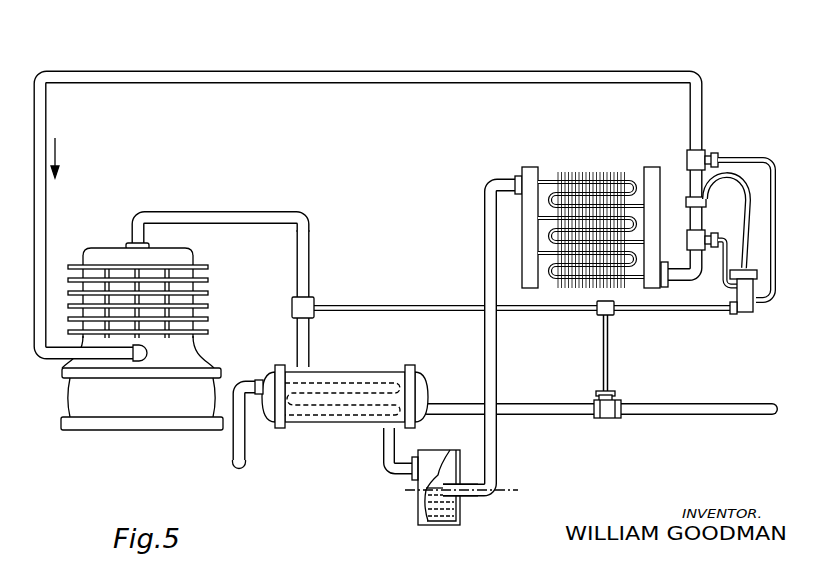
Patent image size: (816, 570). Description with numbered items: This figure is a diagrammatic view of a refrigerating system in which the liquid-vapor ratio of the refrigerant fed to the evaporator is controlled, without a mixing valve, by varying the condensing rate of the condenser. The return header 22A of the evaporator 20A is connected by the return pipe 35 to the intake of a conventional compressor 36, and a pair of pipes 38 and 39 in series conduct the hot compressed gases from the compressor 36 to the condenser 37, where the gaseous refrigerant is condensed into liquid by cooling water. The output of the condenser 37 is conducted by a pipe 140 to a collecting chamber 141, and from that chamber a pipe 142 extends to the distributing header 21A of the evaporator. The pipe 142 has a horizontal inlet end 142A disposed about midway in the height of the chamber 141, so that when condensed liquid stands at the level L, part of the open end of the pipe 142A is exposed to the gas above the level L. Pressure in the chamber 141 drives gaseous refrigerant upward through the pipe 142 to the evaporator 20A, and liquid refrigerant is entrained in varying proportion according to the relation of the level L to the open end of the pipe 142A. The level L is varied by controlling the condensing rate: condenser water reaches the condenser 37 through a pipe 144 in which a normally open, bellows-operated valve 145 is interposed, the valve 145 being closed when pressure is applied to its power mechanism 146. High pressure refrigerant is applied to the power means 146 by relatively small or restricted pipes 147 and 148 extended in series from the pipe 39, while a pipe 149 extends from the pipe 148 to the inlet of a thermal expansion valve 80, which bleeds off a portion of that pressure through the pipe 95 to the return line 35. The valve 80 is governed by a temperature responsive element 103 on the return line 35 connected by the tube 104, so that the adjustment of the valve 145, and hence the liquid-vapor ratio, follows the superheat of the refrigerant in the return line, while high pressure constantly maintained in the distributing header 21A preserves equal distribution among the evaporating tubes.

The return pipe 35 is at (432, 71).
The pipe 38 is at (199, 211).
The pipe 39 is at (309, 279).
The compressor 36 is at (208, 304).
The condenser 37 is at (328, 372).
The pipe 140 is at (383, 445).
The collecting chamber 141 is at (447, 467).
The pipe 142 is at (498, 378).
The horizontal inlet end 142A is at (467, 499).
The distributing header 21A is at (482, 333).
The evaporator 20A is at (601, 148).
The return header 22A is at (651, 178).
The pipe 95 is at (777, 173).
The temperature responsive element 103 is at (707, 192).
The tube 104 is at (742, 236).
The thermal expansion valve 80 is at (764, 322).
The pipe 147 is at (563, 311).
The pipe 148 is at (602, 351).
The pipe 149 is at (626, 313).
The power mechanism 146 is at (613, 397).
The valve 145 is at (607, 418).
The pipe 144 is at (683, 404).
The level L is at (510, 490).